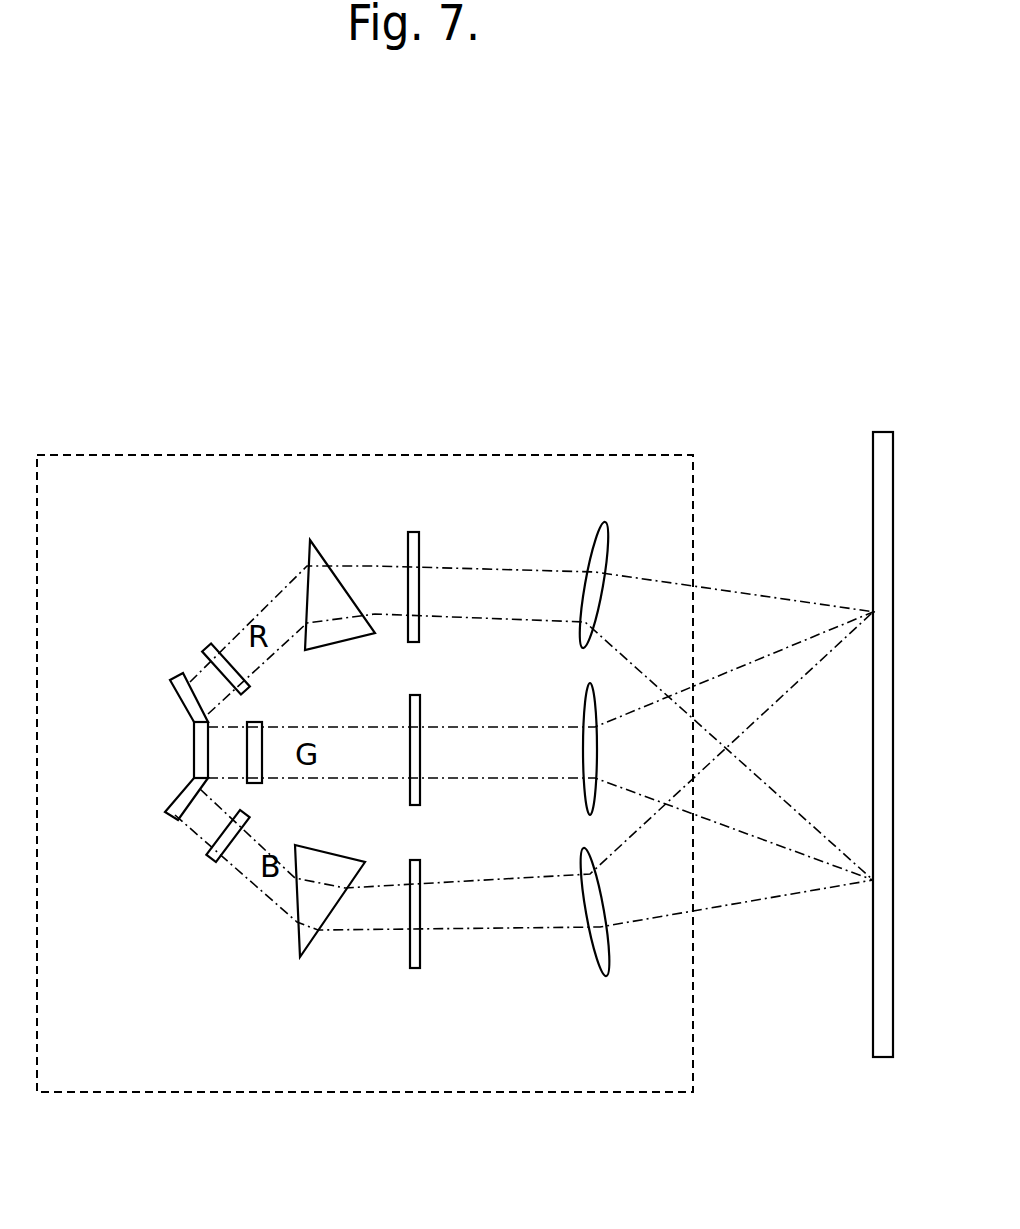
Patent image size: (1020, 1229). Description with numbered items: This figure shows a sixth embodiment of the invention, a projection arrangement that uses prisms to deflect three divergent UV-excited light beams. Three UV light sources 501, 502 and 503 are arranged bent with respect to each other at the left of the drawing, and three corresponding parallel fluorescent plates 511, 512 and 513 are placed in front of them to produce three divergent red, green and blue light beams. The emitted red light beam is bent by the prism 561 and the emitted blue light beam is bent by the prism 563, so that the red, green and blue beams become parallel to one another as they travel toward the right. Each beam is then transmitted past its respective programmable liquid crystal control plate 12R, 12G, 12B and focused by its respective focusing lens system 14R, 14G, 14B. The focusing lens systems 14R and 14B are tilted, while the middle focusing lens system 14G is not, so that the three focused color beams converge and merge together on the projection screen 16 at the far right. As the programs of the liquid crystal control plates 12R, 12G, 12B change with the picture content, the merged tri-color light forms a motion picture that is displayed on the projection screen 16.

The UV light source 501 is at (173, 673).
The UV light source 502 is at (187, 753).
The UV light source 503 is at (165, 812).
The fluorescent plate 511 is at (217, 653).
The fluorescent plate 512 is at (255, 727).
The fluorescent plate 513 is at (218, 872).
The prism 561 is at (308, 560).
The prism 563 is at (302, 950).
The programmable liquid crystal control plate 12R is at (418, 545).
The programmable liquid crystal control plate 12G is at (418, 703).
The programmable liquid crystal control plate 12B is at (418, 872).
The focusing lens system 14R is at (612, 547).
The focusing lens system 14G is at (595, 760).
The focusing lens system 14B is at (593, 957).
The projection screen 16 is at (873, 513).